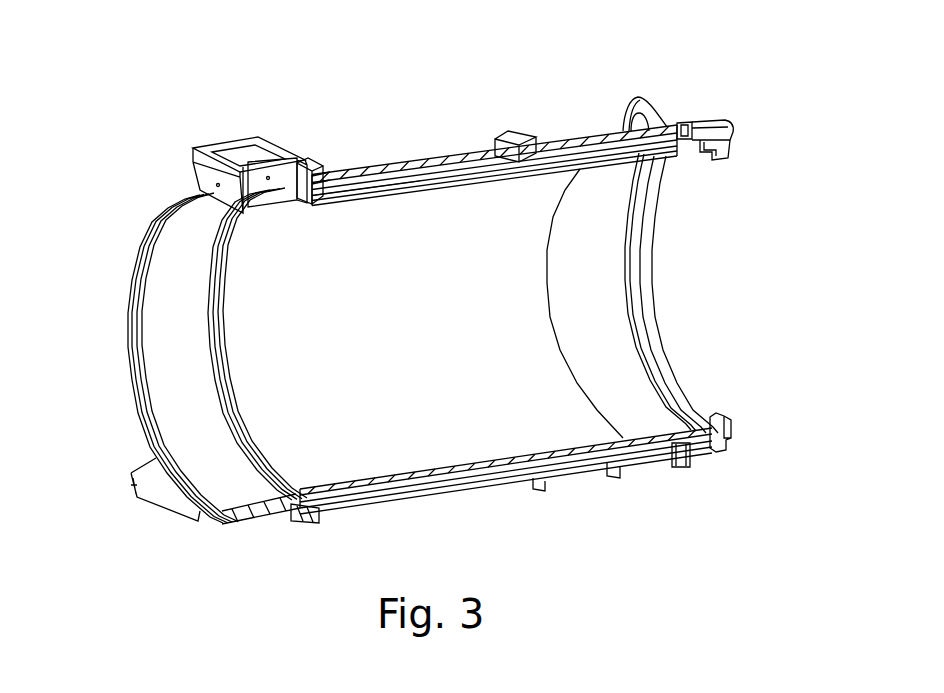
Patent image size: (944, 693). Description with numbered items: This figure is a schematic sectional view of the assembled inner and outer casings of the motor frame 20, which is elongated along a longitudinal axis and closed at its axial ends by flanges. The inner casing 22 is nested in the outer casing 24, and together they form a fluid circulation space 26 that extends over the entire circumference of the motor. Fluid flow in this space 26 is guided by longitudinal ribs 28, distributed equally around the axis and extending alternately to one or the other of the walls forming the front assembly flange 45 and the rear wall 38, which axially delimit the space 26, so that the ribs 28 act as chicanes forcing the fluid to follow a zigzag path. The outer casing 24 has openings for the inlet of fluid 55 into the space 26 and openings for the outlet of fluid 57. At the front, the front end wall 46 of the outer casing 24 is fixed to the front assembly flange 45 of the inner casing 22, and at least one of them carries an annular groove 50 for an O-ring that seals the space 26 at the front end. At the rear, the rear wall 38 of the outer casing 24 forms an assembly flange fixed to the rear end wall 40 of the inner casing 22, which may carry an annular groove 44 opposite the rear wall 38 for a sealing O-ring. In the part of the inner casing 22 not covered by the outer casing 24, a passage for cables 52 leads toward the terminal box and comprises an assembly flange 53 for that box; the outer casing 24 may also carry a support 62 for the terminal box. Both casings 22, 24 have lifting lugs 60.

The frame 20 is at (744, 97).
The inner casing 22 is at (480, 490).
The outer casing 24 is at (590, 140).
The fluid circulation space 26 is at (683, 160).
The longitudinal ribs 28 is at (388, 497).
The rear wall 38 is at (735, 130).
The rear end wall 40 is at (717, 152).
The annular groove 44 is at (727, 149).
The front assembly flange 45 is at (305, 178).
The front end wall 46 is at (338, 168).
The annular groove 50 is at (338, 205).
The passage for cables 52 is at (200, 176).
The assembly flange 53 is at (270, 143).
The openings for the inlet of fluid 55 is at (684, 126).
The openings for the outlet of fluid 57 is at (681, 467).
The lifting lugs 60 is at (637, 100).
The support 62 is at (516, 128).